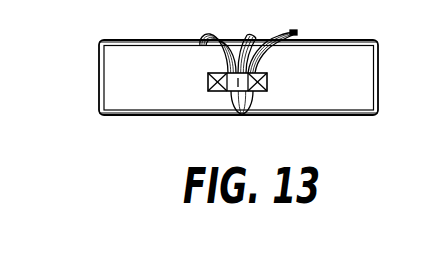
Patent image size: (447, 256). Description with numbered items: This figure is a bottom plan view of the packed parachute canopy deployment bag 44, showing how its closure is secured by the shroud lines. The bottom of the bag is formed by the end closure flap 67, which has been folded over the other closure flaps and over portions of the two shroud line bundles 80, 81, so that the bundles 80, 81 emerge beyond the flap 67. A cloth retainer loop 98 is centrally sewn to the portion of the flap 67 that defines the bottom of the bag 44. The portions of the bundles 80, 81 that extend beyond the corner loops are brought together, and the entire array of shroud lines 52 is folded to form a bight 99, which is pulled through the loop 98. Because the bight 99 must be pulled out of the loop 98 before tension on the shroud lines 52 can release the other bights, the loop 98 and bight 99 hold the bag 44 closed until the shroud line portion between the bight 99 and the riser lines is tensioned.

The parachute canopy deployment bag 44 is at (99, 47).
The end closure flap 67 is at (159, 90).
The shroud line bundle 80 is at (211, 47).
The shroud line bundle 81 is at (248, 37).
The shroud lines 52 is at (298, 33).
The cloth retainer loop 98 is at (231, 84).
The bight 99 is at (251, 106).